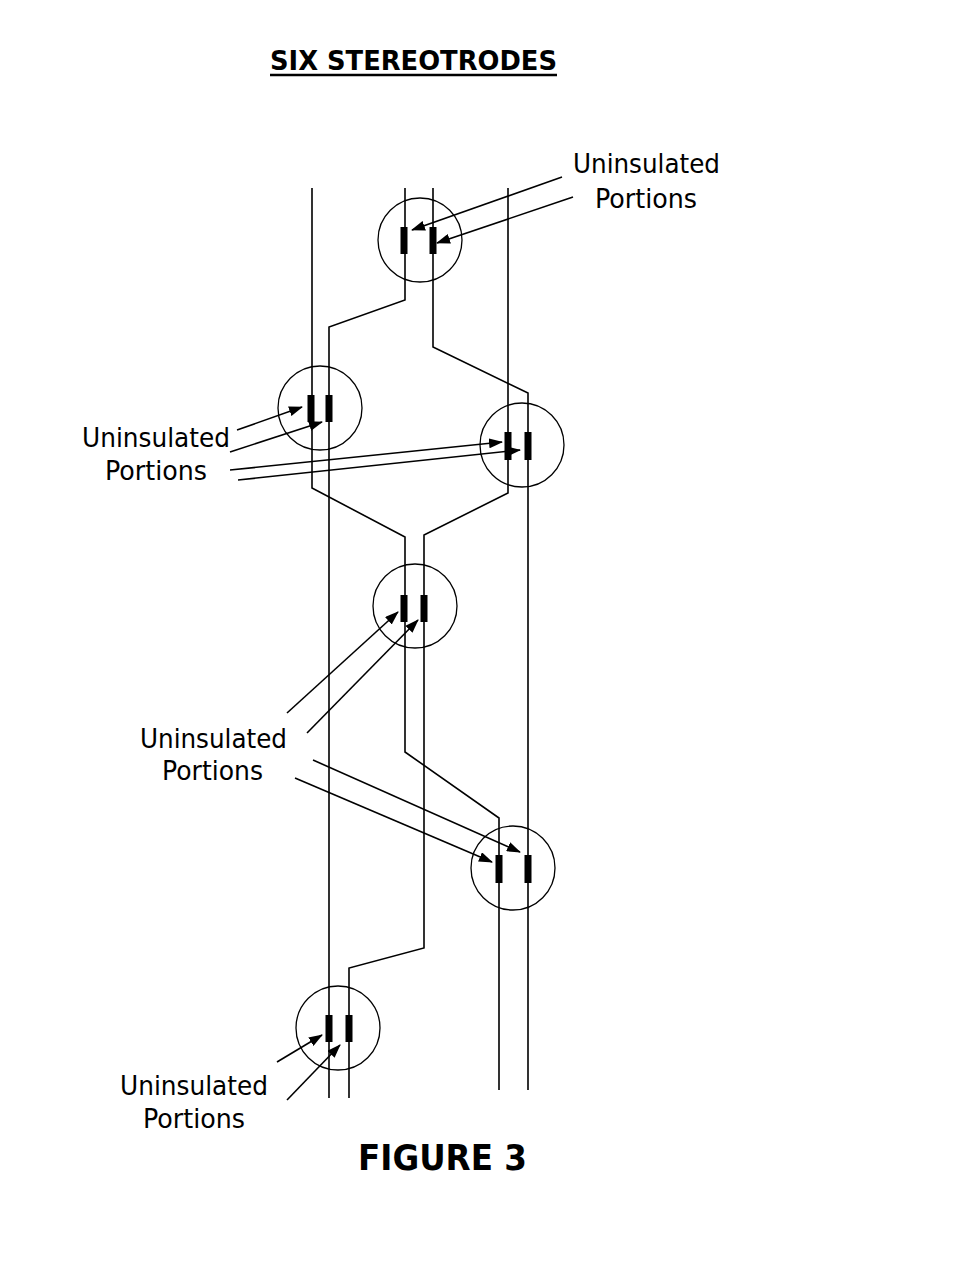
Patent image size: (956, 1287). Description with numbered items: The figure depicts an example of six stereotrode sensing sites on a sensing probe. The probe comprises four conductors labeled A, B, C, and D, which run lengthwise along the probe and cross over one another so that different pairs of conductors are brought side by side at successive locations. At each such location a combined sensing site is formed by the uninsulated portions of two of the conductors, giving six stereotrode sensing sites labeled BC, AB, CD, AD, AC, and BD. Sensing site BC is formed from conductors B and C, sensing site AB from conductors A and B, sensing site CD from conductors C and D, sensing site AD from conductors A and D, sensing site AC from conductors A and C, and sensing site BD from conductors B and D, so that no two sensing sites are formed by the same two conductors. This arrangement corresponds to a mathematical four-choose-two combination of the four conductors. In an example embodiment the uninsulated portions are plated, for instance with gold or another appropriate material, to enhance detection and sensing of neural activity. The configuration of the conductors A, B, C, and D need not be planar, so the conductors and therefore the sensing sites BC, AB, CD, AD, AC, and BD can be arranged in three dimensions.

The conductor A is at (401, 616).
The conductor B is at (371, 620).
The conductor C is at (476, 616).
The conductor D is at (433, 620).
The stereotrode sensing site BC is at (365, 233).
The stereotrode sensing site AB is at (272, 383).
The stereotrode sensing site CD is at (568, 417).
The stereotrode sensing site AD is at (357, 602).
The stereotrode sensing site AC is at (558, 845).
The stereotrode sensing site BD is at (300, 995).